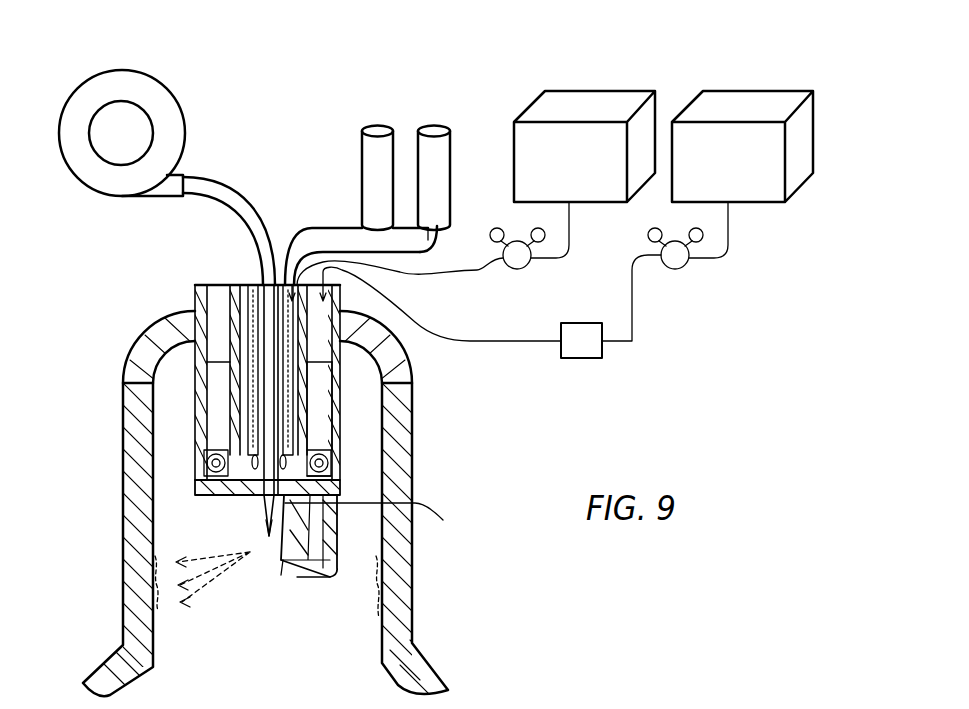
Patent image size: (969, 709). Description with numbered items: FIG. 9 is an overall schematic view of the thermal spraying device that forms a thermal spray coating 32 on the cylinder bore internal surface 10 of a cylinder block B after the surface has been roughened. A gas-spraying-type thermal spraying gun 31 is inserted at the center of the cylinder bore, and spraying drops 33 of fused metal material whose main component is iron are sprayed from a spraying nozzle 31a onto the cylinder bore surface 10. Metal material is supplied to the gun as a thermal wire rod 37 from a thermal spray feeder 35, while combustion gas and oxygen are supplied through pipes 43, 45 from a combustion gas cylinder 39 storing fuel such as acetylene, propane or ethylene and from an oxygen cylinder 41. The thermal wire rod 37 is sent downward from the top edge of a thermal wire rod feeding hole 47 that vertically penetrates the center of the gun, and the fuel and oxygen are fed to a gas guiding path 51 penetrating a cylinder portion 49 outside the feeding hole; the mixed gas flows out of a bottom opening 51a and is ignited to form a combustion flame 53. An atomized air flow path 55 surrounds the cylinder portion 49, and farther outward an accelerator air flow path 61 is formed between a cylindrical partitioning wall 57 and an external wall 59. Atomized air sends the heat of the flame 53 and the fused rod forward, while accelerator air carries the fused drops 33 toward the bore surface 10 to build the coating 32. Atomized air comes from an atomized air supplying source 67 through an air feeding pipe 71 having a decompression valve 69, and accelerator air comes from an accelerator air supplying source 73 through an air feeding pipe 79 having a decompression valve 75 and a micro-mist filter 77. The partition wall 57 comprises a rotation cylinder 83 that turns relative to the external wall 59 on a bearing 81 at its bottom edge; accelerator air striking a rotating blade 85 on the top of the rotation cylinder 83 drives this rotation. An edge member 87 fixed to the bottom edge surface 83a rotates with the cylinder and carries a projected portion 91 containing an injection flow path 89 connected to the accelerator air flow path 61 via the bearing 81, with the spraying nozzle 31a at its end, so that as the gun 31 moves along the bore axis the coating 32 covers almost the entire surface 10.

The cylinder bore internal surface 10 is at (140, 425).
The thermal spraying gun 31 is at (182, 457).
The spraying nozzle 31a is at (272, 548).
The thermal spray coating 32 is at (158, 610).
The spraying drops 33 is at (228, 562).
The thermal spray feeder 35 is at (167, 82).
The thermal wire rod 37 is at (240, 190).
The combustion gas cylinder 39 is at (378, 125).
The oxygen cylinder 41 is at (440, 125).
The pipe 43 is at (332, 227).
The pipe 45 is at (438, 248).
The thermal wire rod feeding hole 47 is at (260, 283).
The cylinder portion 49 is at (137, 345).
The gas guiding path 51 is at (283, 325).
The bottom opening 51a is at (198, 494).
The combustion flame 53 is at (256, 470).
The atomized air flow path 55 is at (240, 283).
The partitioning wall 57 is at (210, 314).
The external wall 59 is at (196, 290).
The accelerator air flow path 61 is at (396, 370).
The atomized air supplying source 67 is at (622, 90).
The decompression valve 69 is at (525, 270).
The air feeding pipe 71 is at (477, 271).
The accelerator air supplying source 73 is at (781, 90).
The decompression valve 75 is at (684, 266).
The micro-mist filter 77 is at (592, 360).
The air feeding pipe 79 is at (537, 343).
The bearing 81 is at (335, 468).
The rotation cylinder 83 is at (335, 440).
The edge surface 83a is at (381, 518).
The rotating blade 85 is at (330, 400).
The edge member 87 is at (310, 590).
The injection flow path 89 is at (325, 578).
The projected portion 91 is at (292, 577).
The cylinder block B is at (130, 333).